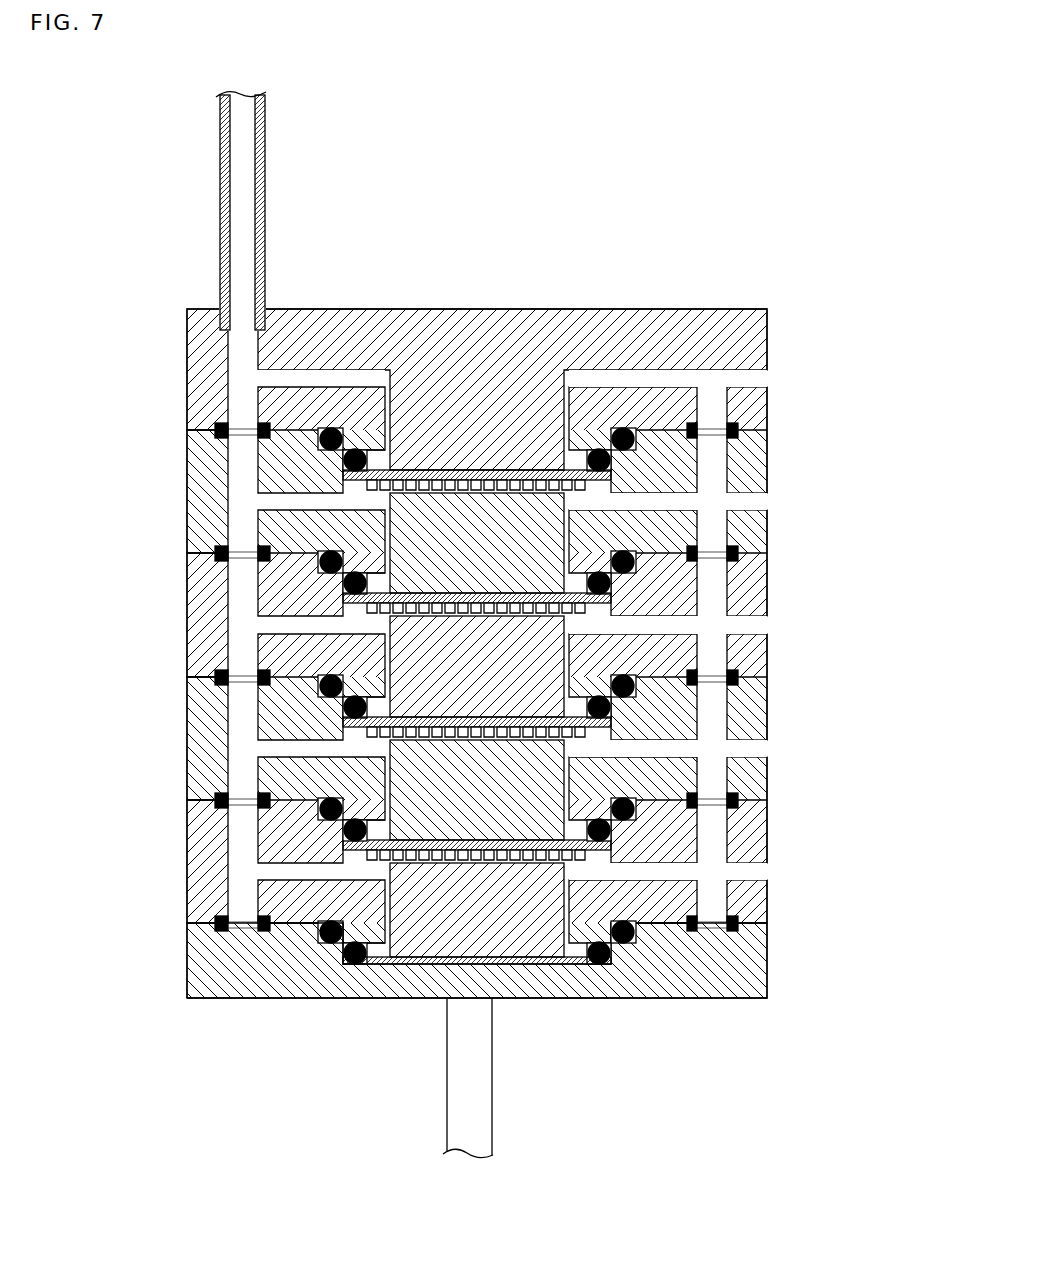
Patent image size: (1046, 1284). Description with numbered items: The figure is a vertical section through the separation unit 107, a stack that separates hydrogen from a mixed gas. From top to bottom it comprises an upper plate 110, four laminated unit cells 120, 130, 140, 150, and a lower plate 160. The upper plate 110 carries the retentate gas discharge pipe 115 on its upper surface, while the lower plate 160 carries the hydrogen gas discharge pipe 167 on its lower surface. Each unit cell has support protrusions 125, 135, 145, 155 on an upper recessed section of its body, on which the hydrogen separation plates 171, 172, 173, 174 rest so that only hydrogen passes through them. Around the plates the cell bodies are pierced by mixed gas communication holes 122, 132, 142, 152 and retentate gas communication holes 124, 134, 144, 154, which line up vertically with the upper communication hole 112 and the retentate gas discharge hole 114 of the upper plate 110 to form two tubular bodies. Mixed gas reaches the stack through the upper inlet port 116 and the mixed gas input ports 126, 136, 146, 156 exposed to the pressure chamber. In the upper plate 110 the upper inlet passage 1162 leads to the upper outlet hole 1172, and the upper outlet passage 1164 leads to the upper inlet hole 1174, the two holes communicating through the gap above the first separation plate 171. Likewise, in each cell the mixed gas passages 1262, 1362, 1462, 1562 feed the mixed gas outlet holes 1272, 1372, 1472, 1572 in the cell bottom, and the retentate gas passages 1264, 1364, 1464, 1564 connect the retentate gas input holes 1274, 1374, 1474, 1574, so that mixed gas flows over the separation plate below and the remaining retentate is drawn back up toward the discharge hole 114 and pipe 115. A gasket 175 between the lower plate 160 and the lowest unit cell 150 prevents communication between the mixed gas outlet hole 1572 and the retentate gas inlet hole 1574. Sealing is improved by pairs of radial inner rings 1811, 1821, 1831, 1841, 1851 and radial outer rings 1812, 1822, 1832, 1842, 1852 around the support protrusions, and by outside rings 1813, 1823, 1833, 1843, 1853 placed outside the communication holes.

The separation unit 107 is at (672, 203).
The upper plate 110 is at (150, 368).
The upper communication hole 112 is at (723, 399).
The retentate gas discharge hole 114 is at (237, 403).
The retentate gas discharge pipe 115 is at (258, 173).
The upper inlet port 116 is at (767, 373).
The upper inlet passage 1162 is at (688, 378).
The upper outlet passage 1164 is at (334, 383).
The upper outlet hole 1172 is at (561, 443).
The upper inlet hole 1174 is at (391, 450).
The hydrogen separation plate 171 is at (476, 472).
The support protrusions 125 is at (518, 491).
The unit cell 120 is at (150, 485).
The mixed gas communication hole 122 is at (723, 522).
The retentate gas communication hole 124 is at (237, 523).
The mixed gas input port 126 is at (688, 502).
The mixed gas passage 1262 is at (723, 476).
The retentate gas passage 1264 is at (298, 507).
The mixed gas outlet hole 1272 is at (561, 566).
The retentate gas input hole 1274 is at (391, 573).
The hydrogen separation plate 172 is at (476, 595).
The support protrusions 135 is at (518, 614).
The unit cell 130 is at (150, 603).
The mixed gas communication hole 132 is at (723, 646).
The retentate gas communication hole 134 is at (237, 648).
The mixed gas input port 136 is at (688, 625).
The mixed gas passage 1362 is at (723, 599).
The retentate gas passage 1364 is at (298, 630).
The mixed gas outlet hole 1372 is at (561, 690).
The retentate gas input hole 1374 is at (391, 696).
The hydrogen separation plate 173 is at (476, 719).
The support protrusions 145 is at (518, 738).
The unit cell 140 is at (150, 730).
The mixed gas communication hole 142 is at (723, 769).
The retentate gas communication hole 144 is at (237, 781).
The mixed gas input port 146 is at (688, 749).
The mixed gas passage 1462 is at (723, 722).
The retentate gas passage 1464 is at (298, 754).
The mixed gas outlet hole 1472 is at (561, 813).
The retentate gas input hole 1474 is at (391, 819).
The hydrogen separation plate 174 is at (500, 317).
The support protrusions 155 is at (518, 861).
The unit cell 150 is at (150, 855).
The mixed gas communication hole 152 is at (723, 892).
The retentate gas communication hole 154 is at (237, 896).
The mixed gas input port 156 is at (688, 872).
The mixed gas passage 1562 is at (723, 845).
The retentate gas passage 1564 is at (298, 877).
The mixed gas outlet hole 1572 is at (561, 936).
The retentate gas input hole 1574 is at (391, 943).
The gasket 175 is at (568, 965).
The lower plate 160 is at (150, 973).
The hydrogen gas discharge pipe 167 is at (490, 1101).
The radial inner ring 1811 is at (599, 450).
The radial outer ring 1812 is at (626, 432).
The outside ring 1813 is at (740, 430).
The radial inner ring 1821 is at (599, 573).
The radial outer ring 1822 is at (627, 554).
The outside ring 1823 is at (740, 553).
The radial inner ring 1831 is at (599, 697).
The radial outer ring 1832 is at (627, 678).
The outside ring 1833 is at (740, 677).
The radial inner ring 1841 is at (599, 820).
The radial outer ring 1842 is at (627, 801).
The outside ring 1843 is at (740, 800).
The radial inner ring 1851 is at (599, 943).
The radial outer ring 1852 is at (627, 924).
The outside ring 1853 is at (740, 923).